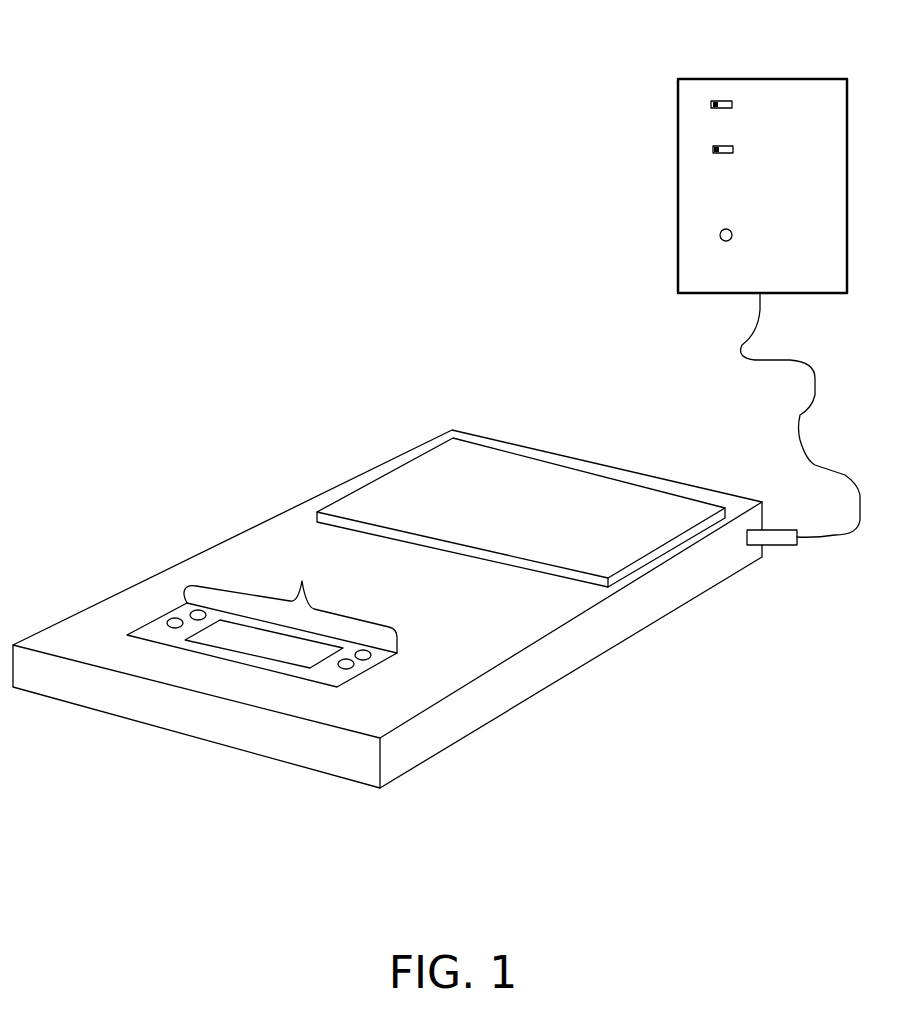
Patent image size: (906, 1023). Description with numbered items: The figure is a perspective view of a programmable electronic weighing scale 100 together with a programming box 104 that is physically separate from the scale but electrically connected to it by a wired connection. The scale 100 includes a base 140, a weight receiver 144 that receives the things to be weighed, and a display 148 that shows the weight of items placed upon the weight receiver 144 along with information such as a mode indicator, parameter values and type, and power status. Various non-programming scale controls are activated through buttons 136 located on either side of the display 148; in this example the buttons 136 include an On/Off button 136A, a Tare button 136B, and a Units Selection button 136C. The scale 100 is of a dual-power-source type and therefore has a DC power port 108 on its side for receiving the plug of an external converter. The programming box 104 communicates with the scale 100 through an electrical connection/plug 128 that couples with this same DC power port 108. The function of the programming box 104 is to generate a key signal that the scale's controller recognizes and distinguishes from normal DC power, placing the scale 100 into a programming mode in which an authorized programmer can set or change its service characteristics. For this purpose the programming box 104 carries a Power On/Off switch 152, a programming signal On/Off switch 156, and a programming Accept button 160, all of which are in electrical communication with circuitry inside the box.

The programmable electronic weighing scale 100 is at (226, 466).
The programming box 104 is at (651, 123).
The DC power port 108 is at (747, 533).
The electrical connection/plug 128 is at (780, 538).
The buttons 136 is at (305, 643).
The On/Off button 136A is at (372, 655).
The Tare button 136B is at (350, 668).
The Units Selection button 136C is at (197, 611).
The base 140 is at (290, 745).
The weight receiver 144 is at (535, 490).
The display 148 is at (255, 650).
The Power On/Off switch 152 is at (716, 104).
The programming signal On/Off switch 156 is at (716, 150).
The programming Accept button 160 is at (728, 230).